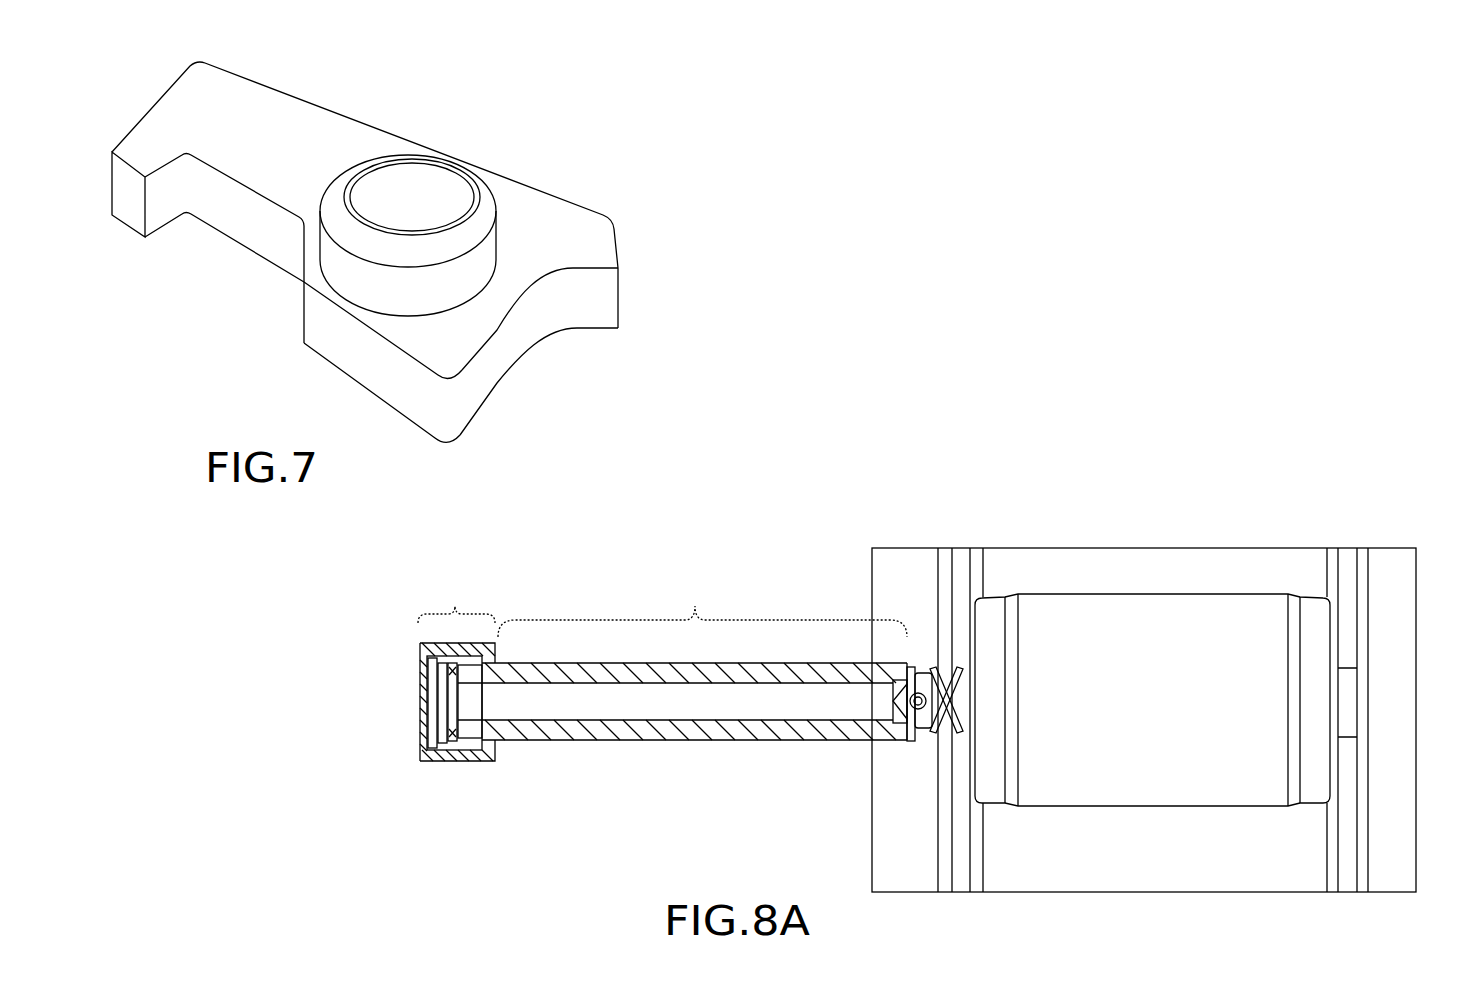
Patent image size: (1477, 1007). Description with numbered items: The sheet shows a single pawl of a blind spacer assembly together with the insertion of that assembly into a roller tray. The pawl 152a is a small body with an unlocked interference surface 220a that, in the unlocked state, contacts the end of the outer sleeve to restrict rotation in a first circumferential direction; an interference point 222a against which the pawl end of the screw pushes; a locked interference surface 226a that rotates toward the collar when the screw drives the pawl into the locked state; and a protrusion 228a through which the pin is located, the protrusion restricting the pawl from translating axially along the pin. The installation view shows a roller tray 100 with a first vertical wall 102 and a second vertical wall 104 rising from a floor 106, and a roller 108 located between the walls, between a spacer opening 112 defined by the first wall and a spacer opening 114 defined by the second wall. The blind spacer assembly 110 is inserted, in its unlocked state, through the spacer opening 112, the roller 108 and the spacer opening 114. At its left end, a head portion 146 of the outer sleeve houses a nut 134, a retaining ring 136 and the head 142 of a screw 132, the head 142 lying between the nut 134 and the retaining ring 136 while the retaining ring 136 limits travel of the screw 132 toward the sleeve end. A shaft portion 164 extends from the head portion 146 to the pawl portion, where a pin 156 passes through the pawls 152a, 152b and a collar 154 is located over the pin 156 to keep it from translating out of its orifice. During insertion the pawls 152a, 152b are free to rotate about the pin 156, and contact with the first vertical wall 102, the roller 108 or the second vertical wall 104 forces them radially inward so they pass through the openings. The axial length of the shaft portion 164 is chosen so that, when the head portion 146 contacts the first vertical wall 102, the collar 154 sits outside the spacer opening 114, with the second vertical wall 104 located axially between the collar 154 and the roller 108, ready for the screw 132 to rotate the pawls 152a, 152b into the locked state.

In FIG. 8A, the roller tray 100 is at (1093, 538).
In FIG. 8A, the first vertical wall 102 is at (961, 560).
In FIG. 8A, the second vertical wall 104 is at (1350, 570).
In FIG. 8A, the floor 106 is at (1160, 874).
In FIG. 8A, the roller 108 is at (1170, 709).
In FIG. 8A, the blind spacer assembly 110 is at (403, 772).
In FIG. 8A, the spacer opening 112 is at (950, 752).
In FIG. 8A, the spacer opening 114 is at (1356, 683).
In FIG. 8A, the screw 132 is at (603, 703).
In FIG. 8A, the nut 134 is at (473, 735).
In FIG. 8A, the retaining ring 136 is at (433, 727).
In FIG. 8A, the head 142 is at (443, 693).
In FIG. 8A, the head portion 146 is at (456, 598).
In FIG. 7, the pawl 152a is at (676, 140).
In FIG. 8A, the pawl 152a is at (960, 680).
In FIG. 8A, the pawl 152b is at (960, 722).
In FIG. 8A, the collar 154 is at (911, 668).
In FIG. 8A, the pin 156 is at (926, 701).
In FIG. 8A, the shaft portion 164 is at (702, 605).
In FIG. 7, the unlocked interference surface 220a is at (577, 310).
In FIG. 7, the interference point 222a is at (453, 430).
In FIG. 7, the locked interference surface 226a is at (242, 213).
In FIG. 7, the protrusion 228a is at (482, 206).